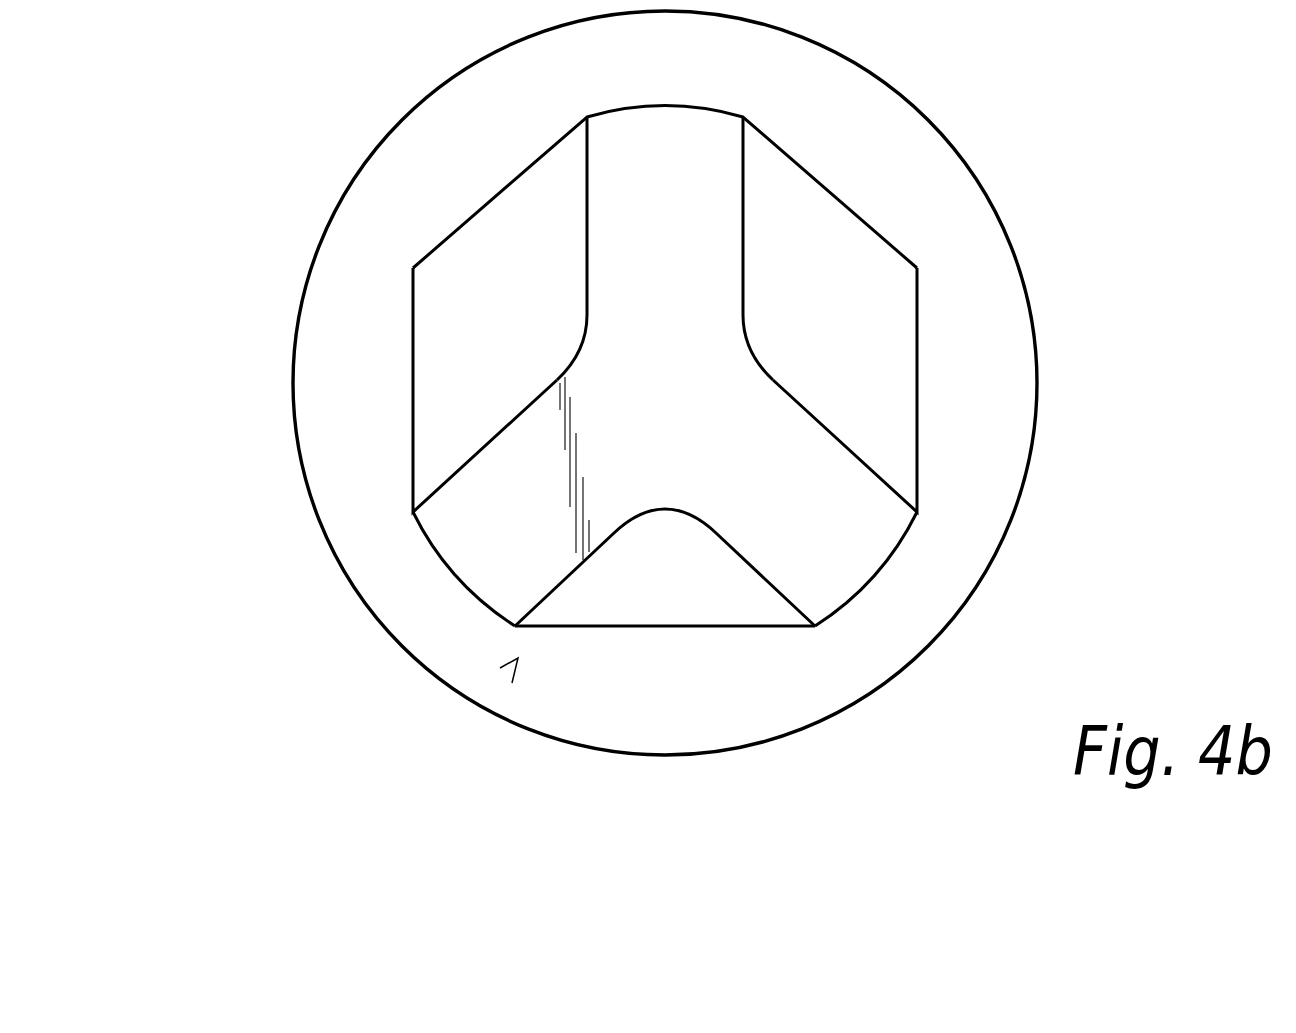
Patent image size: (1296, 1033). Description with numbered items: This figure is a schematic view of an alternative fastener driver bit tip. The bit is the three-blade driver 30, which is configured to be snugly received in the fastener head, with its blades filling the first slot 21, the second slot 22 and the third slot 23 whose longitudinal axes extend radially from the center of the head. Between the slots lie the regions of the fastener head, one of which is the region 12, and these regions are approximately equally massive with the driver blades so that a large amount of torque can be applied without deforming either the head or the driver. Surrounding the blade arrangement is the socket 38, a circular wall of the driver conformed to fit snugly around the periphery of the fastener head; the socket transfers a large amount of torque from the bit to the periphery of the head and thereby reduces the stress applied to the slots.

The region 12 is at (663, 603).
The first slot 21 is at (700, 152).
The second slot 22 is at (502, 580).
The third slot 23 is at (853, 578).
The three-blade driver 30 is at (518, 658).
The socket 38 is at (337, 518).